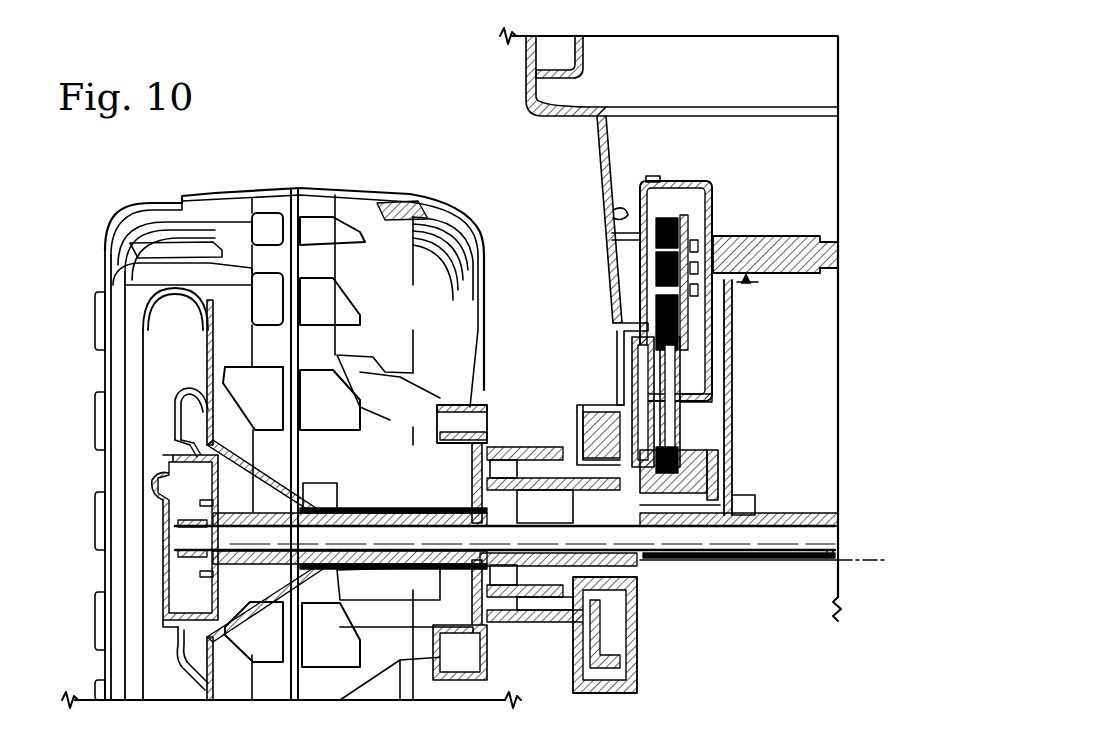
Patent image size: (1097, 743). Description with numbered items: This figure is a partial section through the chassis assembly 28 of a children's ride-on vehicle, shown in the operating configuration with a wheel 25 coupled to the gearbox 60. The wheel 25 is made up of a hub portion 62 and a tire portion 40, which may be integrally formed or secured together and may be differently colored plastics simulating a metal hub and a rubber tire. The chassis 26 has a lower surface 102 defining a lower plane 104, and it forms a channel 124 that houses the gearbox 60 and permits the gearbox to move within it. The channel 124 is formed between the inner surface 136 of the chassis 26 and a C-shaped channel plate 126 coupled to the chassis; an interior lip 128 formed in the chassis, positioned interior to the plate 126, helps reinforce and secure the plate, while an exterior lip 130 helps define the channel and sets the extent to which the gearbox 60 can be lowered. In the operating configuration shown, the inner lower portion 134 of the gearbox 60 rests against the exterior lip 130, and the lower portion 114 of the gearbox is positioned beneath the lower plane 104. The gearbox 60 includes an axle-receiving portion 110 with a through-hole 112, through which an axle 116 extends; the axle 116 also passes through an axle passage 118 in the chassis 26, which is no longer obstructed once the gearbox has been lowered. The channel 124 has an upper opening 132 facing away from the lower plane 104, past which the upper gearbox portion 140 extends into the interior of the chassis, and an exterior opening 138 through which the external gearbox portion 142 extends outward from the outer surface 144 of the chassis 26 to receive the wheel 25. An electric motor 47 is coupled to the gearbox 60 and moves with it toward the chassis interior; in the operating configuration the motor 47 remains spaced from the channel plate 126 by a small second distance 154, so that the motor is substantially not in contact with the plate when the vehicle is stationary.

The wheel 25 is at (362, 188).
The chassis 26 is at (598, 177).
The chassis assembly 28 is at (279, 150).
The tire portion 40 is at (100, 250).
The electric motor 47 is at (800, 276).
The gearbox 60 is at (650, 182).
The hub portion 62 is at (168, 405).
The lower surface 102 is at (752, 565).
The lower plane 104 is at (879, 556).
The axle-receiving portion 110 is at (510, 640).
The through-hole 112 is at (503, 522).
The lower portion 114 is at (640, 668).
The axle 116 is at (816, 530).
The axle passage 118 is at (770, 552).
The channel 124 is at (720, 268).
The channel plate 126 is at (734, 372).
The interior lip 128 is at (742, 498).
The exterior lip 130 is at (640, 520).
The upper opening 132 is at (722, 225).
The inner lower portion 134 is at (672, 515).
The inner surface 136 is at (617, 212).
The exterior opening 138 is at (603, 350).
The upper gearbox portion 140 is at (636, 236).
The external gearbox portion 142 is at (592, 408).
The outer surface 144 is at (592, 130).
The second distance 154 is at (748, 288).